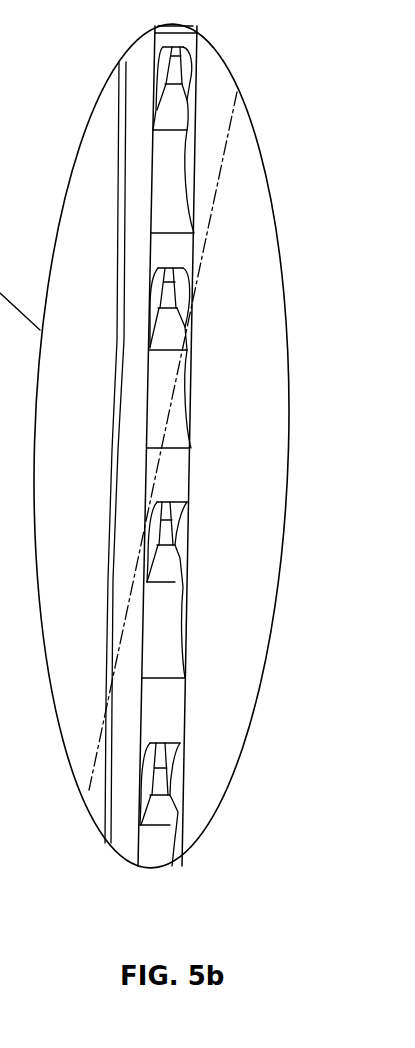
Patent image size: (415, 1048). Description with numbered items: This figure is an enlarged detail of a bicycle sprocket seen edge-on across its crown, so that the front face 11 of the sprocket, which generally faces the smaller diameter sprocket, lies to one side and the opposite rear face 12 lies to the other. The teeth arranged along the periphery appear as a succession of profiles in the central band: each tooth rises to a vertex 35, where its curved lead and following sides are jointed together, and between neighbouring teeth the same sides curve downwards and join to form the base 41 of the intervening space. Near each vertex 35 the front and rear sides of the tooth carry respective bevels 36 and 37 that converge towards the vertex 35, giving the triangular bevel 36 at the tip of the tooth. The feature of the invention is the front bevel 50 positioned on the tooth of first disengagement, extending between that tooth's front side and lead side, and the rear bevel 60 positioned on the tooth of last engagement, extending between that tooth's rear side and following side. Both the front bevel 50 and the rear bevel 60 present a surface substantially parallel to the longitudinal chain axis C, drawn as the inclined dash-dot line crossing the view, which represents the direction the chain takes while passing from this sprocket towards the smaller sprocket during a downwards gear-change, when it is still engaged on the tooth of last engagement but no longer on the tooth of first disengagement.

The front face 11 is at (107, 621).
The rear face 12 is at (185, 715).
The vertex 35 is at (170, 300).
The bevel 36 is at (163, 292).
The bevel 37 is at (180, 285).
The base 41 is at (185, 447).
The front bevel 50 is at (150, 496).
The rear bevel 60 is at (183, 363).
The chain axis C is at (232, 130).